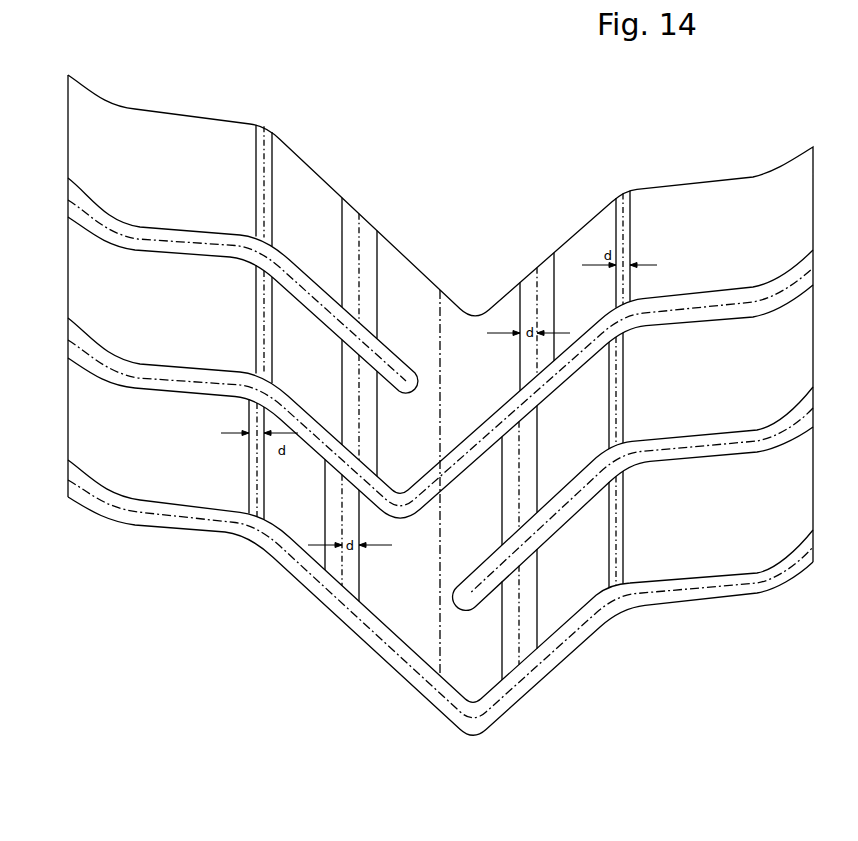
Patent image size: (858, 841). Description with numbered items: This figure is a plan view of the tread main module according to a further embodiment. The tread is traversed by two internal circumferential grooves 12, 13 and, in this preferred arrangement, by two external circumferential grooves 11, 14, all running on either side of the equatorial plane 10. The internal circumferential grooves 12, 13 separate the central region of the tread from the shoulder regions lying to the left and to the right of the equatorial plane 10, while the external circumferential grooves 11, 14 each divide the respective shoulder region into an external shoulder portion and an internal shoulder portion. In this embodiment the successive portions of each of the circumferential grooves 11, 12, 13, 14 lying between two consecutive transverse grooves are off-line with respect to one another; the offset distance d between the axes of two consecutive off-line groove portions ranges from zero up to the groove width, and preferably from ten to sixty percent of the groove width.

The equatorial plane 10 is at (437, 458).
The external circumferential groove 11 is at (263, 305).
The internal circumferential groove 12 is at (351, 389).
The internal circumferential groove 13 is at (528, 454).
The external circumferential groove 14 is at (618, 371).